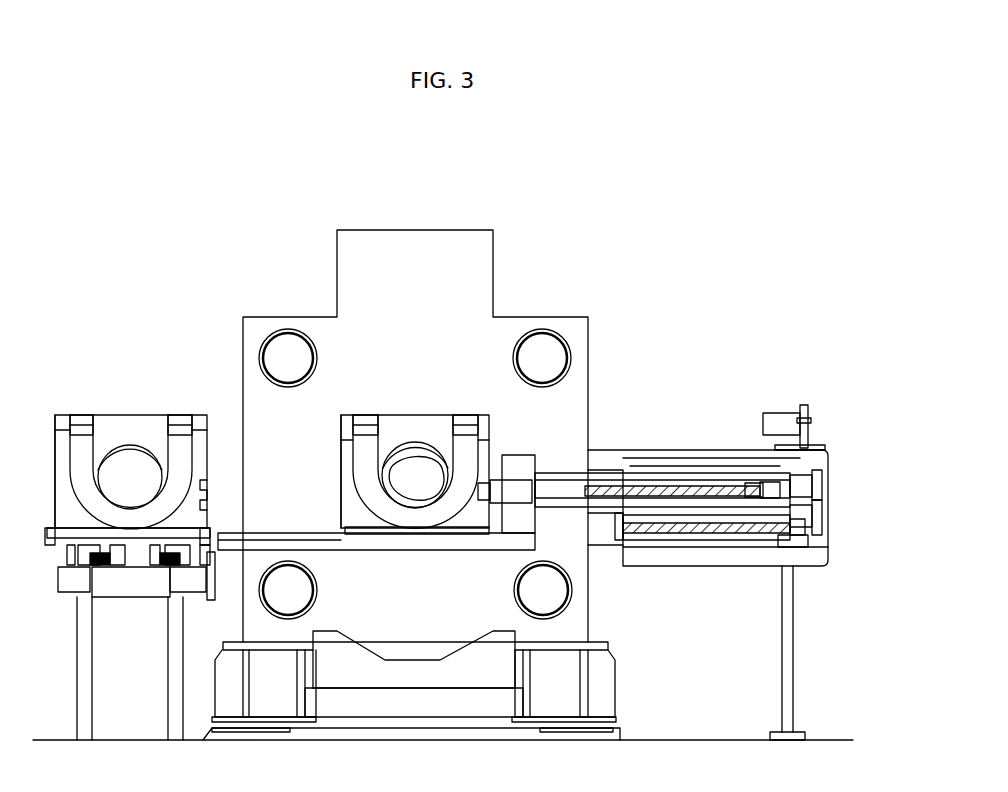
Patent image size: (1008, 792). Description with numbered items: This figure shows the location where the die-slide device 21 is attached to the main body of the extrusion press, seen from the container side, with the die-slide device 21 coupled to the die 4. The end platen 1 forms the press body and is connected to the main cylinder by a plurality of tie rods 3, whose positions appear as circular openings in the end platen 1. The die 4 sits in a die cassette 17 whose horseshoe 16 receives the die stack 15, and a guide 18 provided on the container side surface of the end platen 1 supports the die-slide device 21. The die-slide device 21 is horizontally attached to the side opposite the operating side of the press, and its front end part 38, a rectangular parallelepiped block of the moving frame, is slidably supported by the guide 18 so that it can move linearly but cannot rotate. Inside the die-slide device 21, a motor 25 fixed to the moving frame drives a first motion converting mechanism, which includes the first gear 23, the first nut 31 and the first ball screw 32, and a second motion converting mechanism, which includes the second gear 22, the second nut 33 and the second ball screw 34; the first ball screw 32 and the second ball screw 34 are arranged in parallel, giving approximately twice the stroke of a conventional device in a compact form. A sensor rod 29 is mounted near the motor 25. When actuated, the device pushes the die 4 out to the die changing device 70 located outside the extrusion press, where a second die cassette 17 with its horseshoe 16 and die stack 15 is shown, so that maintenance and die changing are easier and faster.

The end platen 1 is at (415, 278).
The tie rod 3 is at (542, 358).
The die 4 is at (183, 400).
The die stack 15 is at (130, 475).
The horseshoe 16 is at (82, 435).
The die cassette 17 is at (63, 462).
The guide 18 is at (425, 548).
The die-slide device 21 is at (834, 445).
The second gear 22 is at (815, 478).
The first gear 23 is at (817, 515).
The motor 25 is at (780, 425).
The sensor rod 29 is at (808, 440).
The first nut 31 is at (800, 548).
The first ball screw 32 is at (720, 525).
The second nut 33 is at (760, 493).
The second ball screw 34 is at (655, 490).
The front end part 38 is at (518, 462).
The die changing device 70 is at (60, 570).